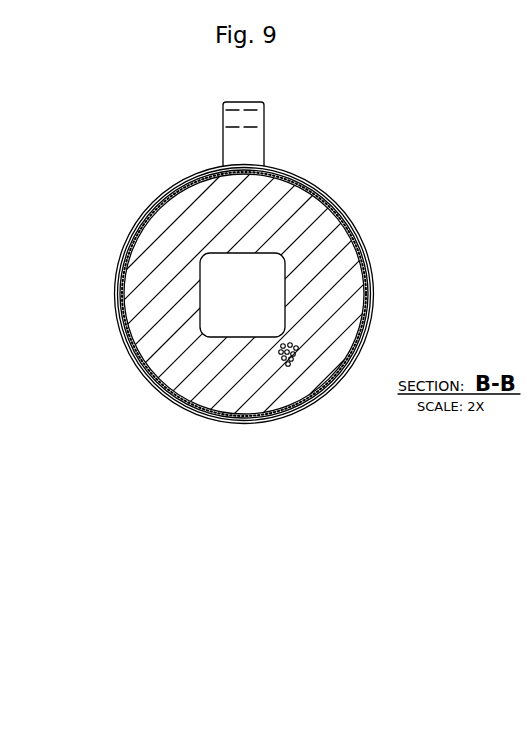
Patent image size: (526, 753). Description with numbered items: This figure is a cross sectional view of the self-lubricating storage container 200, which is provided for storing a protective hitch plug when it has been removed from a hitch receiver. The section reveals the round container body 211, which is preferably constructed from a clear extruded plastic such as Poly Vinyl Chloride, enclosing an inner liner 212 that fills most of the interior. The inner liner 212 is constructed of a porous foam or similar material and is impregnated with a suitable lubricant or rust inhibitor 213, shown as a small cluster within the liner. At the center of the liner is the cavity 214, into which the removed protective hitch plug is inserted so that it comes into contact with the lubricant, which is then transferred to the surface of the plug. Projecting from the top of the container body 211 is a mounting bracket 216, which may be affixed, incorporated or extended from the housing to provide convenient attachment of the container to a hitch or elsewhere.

The self-lubricating storage container 200 is at (241, 483).
The container body 211 is at (125, 335).
The inner liner 212 is at (193, 376).
The lubricant or rust inhibitor 213 is at (291, 362).
The cavity 214 is at (210, 267).
The mounting bracket 216 is at (266, 101).